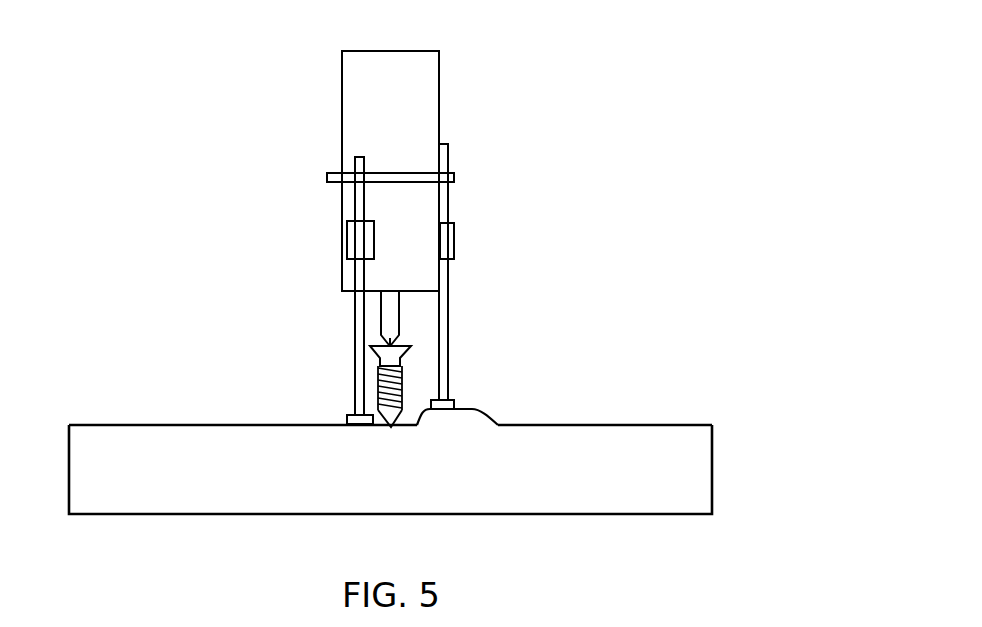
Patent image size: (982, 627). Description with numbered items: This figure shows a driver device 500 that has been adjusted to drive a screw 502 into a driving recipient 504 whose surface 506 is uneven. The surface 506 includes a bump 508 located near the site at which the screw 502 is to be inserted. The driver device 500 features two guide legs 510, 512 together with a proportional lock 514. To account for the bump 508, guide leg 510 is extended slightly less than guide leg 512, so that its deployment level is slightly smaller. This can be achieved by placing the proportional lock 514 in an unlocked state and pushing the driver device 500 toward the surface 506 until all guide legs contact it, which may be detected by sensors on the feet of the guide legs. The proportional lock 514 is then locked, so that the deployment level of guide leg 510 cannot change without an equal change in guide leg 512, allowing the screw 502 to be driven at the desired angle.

The driver device 500 is at (367, 220).
The screw 502 is at (393, 426).
The driving recipient 504 is at (700, 438).
The surface 506 is at (563, 425).
The bump 508 is at (470, 418).
The guide leg 510 is at (441, 316).
The guide leg 512 is at (359, 338).
The proportional lock 514 is at (432, 178).